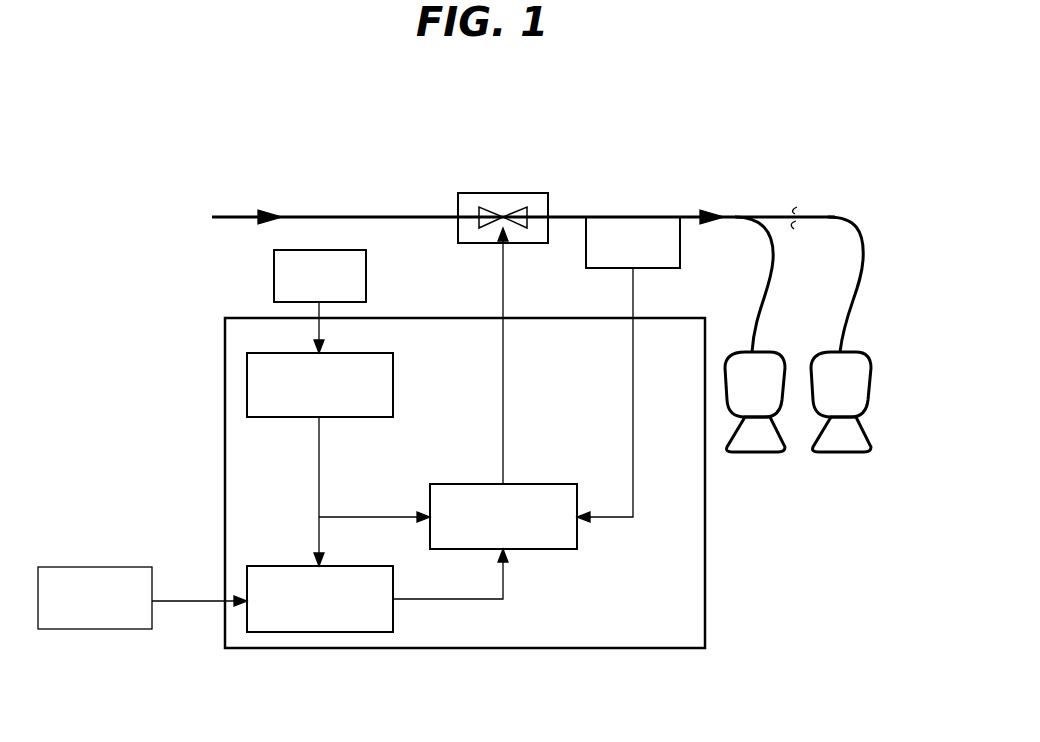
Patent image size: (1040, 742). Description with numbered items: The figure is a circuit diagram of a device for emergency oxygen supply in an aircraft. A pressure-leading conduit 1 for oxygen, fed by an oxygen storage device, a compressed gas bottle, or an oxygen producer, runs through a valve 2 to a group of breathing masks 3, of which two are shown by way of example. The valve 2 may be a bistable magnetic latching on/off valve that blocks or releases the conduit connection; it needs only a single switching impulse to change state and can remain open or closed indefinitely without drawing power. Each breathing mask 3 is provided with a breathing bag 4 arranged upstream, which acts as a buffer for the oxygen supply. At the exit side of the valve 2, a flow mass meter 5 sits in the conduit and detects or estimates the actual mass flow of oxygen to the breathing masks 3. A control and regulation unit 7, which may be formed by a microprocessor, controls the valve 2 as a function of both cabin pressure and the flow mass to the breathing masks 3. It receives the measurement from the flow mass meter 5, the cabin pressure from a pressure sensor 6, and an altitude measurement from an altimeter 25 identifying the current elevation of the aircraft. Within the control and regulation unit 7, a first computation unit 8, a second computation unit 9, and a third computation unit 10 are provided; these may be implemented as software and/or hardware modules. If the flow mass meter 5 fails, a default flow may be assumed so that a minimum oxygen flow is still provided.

The pressure-leading conduit 1 is at (225, 215).
The valve 2 is at (530, 192).
The breathing masks 3 is at (886, 387).
The breathing bag 4 is at (746, 398).
The flow mass meter 5 is at (623, 255).
The pressure sensor 6 is at (309, 289).
The control and regulation unit 7 is at (705, 572).
The first computation unit 8 is at (338, 459).
The second computation unit 9 is at (377, 590).
The third computation unit 10 is at (503, 388).
The altimeter 25 is at (82, 609).